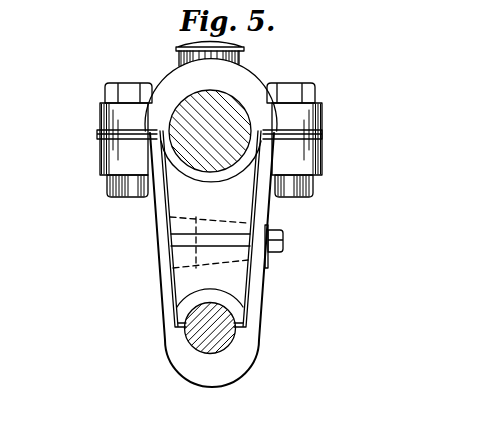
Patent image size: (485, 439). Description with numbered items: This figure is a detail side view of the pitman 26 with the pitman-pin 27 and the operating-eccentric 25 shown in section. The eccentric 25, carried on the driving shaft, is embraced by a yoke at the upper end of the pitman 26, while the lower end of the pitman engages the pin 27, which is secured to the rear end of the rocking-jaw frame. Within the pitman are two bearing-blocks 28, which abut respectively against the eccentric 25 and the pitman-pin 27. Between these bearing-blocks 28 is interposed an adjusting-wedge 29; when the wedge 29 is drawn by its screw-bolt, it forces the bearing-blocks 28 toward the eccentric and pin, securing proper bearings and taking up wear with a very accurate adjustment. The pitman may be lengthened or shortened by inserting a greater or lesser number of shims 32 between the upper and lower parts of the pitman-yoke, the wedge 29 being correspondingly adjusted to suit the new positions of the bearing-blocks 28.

The operating-eccentric 25 is at (228, 107).
The pitman 26 is at (258, 292).
The pitman-pin 27 is at (218, 333).
The bearing-blocks 28 is at (210, 241).
The adjusting-wedge 29 is at (236, 239).
The shims 32 is at (338, 137).